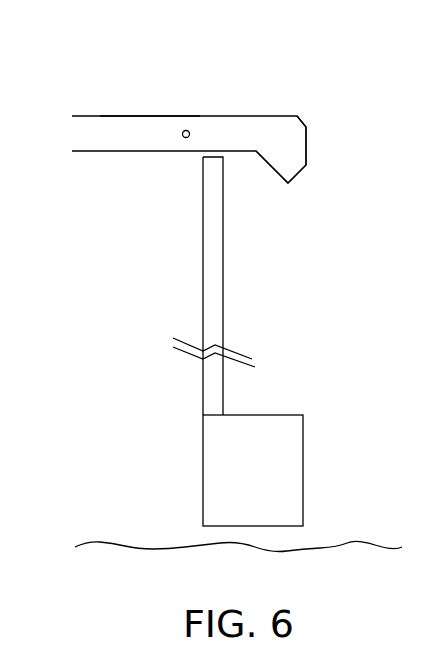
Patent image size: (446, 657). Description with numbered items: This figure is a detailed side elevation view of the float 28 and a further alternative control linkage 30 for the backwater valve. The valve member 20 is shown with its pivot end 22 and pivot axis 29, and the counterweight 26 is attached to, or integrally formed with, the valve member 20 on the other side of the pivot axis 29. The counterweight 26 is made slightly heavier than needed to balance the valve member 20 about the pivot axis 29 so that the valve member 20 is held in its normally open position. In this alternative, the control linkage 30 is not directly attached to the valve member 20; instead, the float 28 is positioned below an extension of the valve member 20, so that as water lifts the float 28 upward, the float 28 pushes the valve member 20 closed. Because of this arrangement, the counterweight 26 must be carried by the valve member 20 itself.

The valve member 20 is at (103, 116).
The pivot end 22 is at (167, 115).
The pivot axis 29 is at (188, 130).
The counterweight 26 is at (306, 145).
The control linkage 30 is at (215, 277).
The float 28 is at (288, 468).